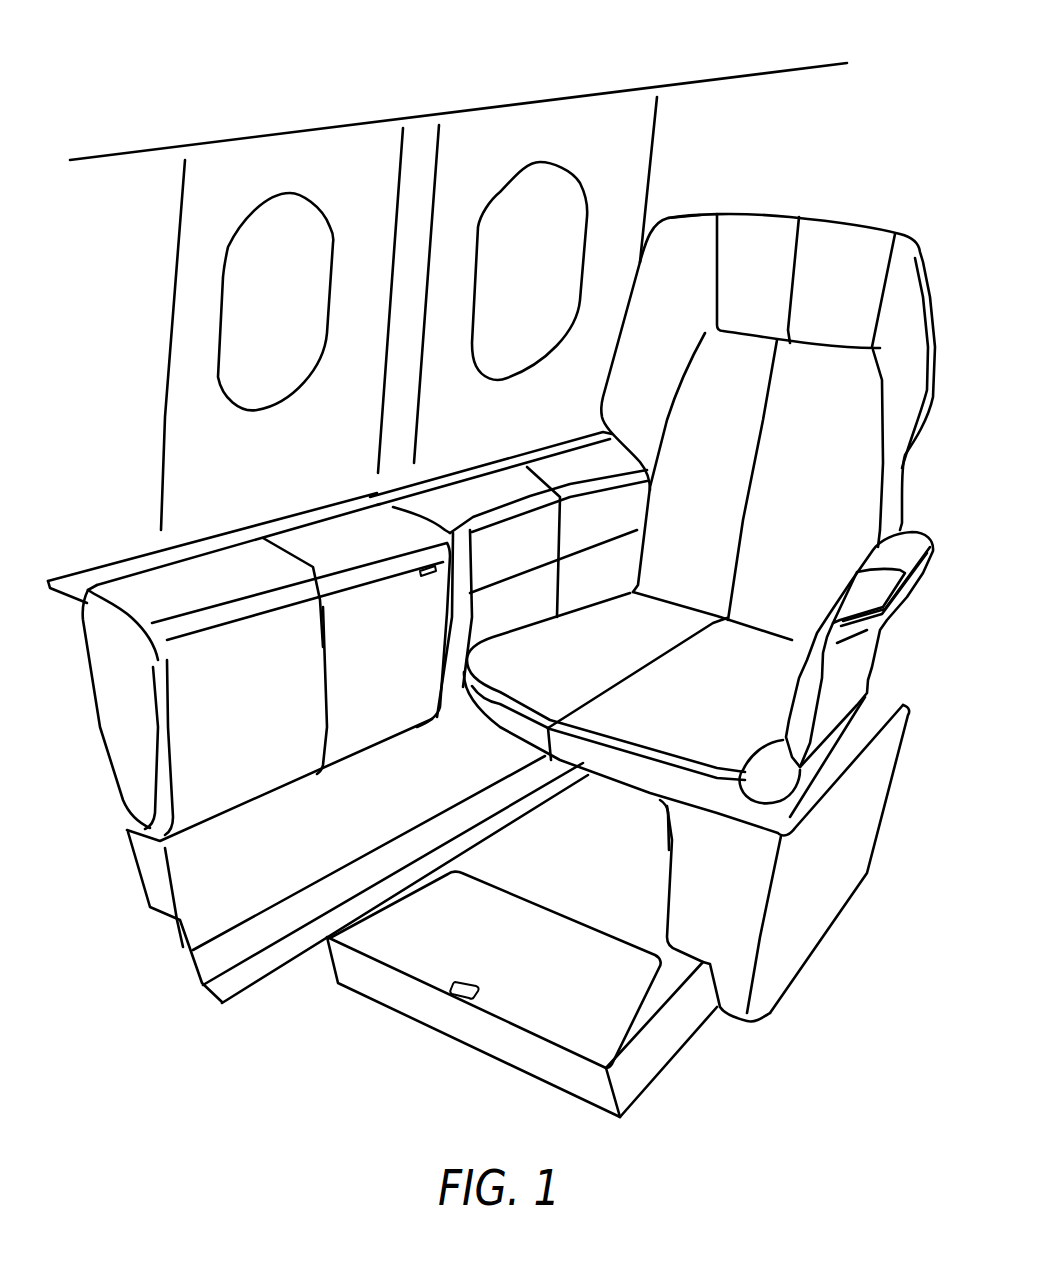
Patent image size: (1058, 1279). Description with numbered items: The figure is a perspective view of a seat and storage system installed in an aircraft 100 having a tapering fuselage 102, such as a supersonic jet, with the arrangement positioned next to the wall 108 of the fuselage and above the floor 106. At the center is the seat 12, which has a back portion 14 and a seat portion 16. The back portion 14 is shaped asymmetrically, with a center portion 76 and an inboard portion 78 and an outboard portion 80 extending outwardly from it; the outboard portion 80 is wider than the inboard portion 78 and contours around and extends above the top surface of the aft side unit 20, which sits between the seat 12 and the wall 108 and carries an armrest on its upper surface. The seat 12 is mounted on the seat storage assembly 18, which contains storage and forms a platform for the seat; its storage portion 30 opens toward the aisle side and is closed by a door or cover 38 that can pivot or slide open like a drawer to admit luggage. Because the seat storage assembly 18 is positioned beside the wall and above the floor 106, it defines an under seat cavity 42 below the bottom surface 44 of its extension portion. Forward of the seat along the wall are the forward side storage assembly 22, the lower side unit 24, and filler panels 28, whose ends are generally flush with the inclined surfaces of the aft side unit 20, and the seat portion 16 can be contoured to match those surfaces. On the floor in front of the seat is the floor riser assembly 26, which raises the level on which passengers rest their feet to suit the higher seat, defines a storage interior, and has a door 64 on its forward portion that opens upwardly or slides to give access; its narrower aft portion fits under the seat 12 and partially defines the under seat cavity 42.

The seat 12 is at (855, 162).
The back portion 14 is at (781, 372).
The seat portion 16 is at (714, 709).
The seat storage assembly 18 is at (870, 703).
The aft side unit 20 is at (480, 497).
The forward side storage assembly 22 is at (328, 717).
The lower side unit 24 is at (193, 890).
The floor riser assembly 26 is at (528, 1008).
The filler panels 28 is at (77, 583).
The storage portion 30 is at (730, 927).
The door or cover 38 is at (847, 860).
The under seat cavity 42 is at (598, 798).
The bottom surface 44 is at (667, 810).
The door 64 is at (553, 1013).
The center portion 76 is at (760, 237).
The inboard portion 78 is at (907, 310).
The outboard portion 80 is at (683, 237).
The aircraft 100 is at (130, 180).
The tapering fuselage 102 is at (565, 97).
The floor 106 is at (332, 1069).
The wall 108 is at (252, 482).